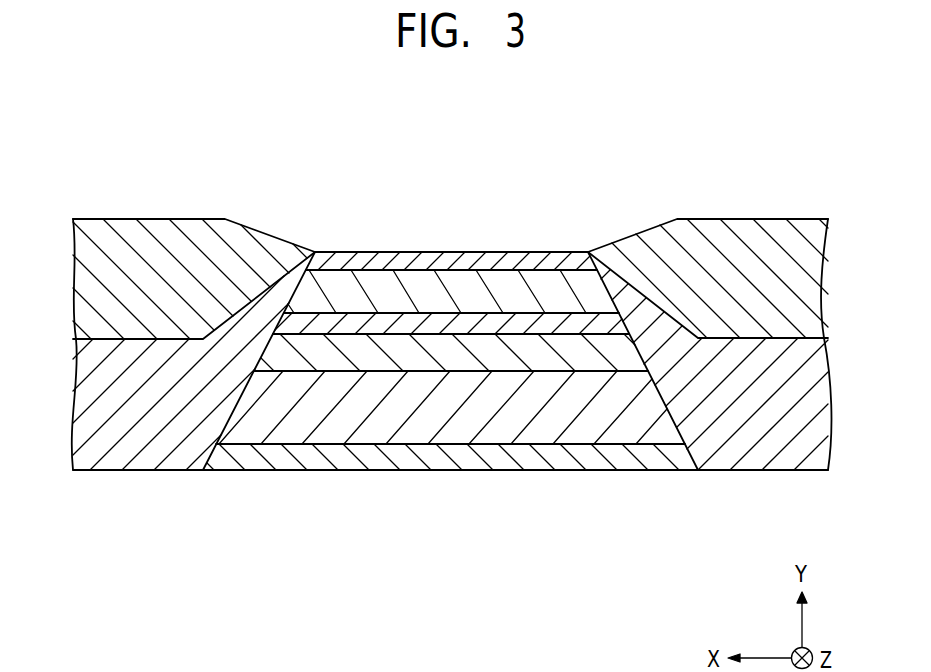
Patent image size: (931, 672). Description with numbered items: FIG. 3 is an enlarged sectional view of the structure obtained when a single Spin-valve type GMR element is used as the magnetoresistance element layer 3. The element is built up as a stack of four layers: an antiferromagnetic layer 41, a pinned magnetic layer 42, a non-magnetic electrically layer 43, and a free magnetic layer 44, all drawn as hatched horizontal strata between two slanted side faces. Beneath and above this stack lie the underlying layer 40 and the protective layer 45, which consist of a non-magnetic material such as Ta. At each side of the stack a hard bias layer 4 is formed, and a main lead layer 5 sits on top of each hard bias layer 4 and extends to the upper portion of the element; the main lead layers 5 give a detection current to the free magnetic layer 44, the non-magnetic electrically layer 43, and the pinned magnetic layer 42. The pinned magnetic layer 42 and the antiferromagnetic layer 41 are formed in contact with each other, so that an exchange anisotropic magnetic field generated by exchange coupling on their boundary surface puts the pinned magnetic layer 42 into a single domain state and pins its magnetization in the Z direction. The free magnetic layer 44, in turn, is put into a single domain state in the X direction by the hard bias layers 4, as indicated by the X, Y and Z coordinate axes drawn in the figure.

The magnetoresistance element layer 3 is at (488, 185).
The hard bias layer 4 is at (143, 453).
The main lead layer 5 is at (130, 247).
The underlying layer 40 is at (372, 462).
The antiferromagnetic layer 41 is at (441, 402).
The pinned magnetic layer 42 is at (502, 355).
The non-magnetic electrically layer 43 is at (572, 327).
The free magnetic layer 44 is at (527, 288).
The protective layer 45 is at (428, 262).